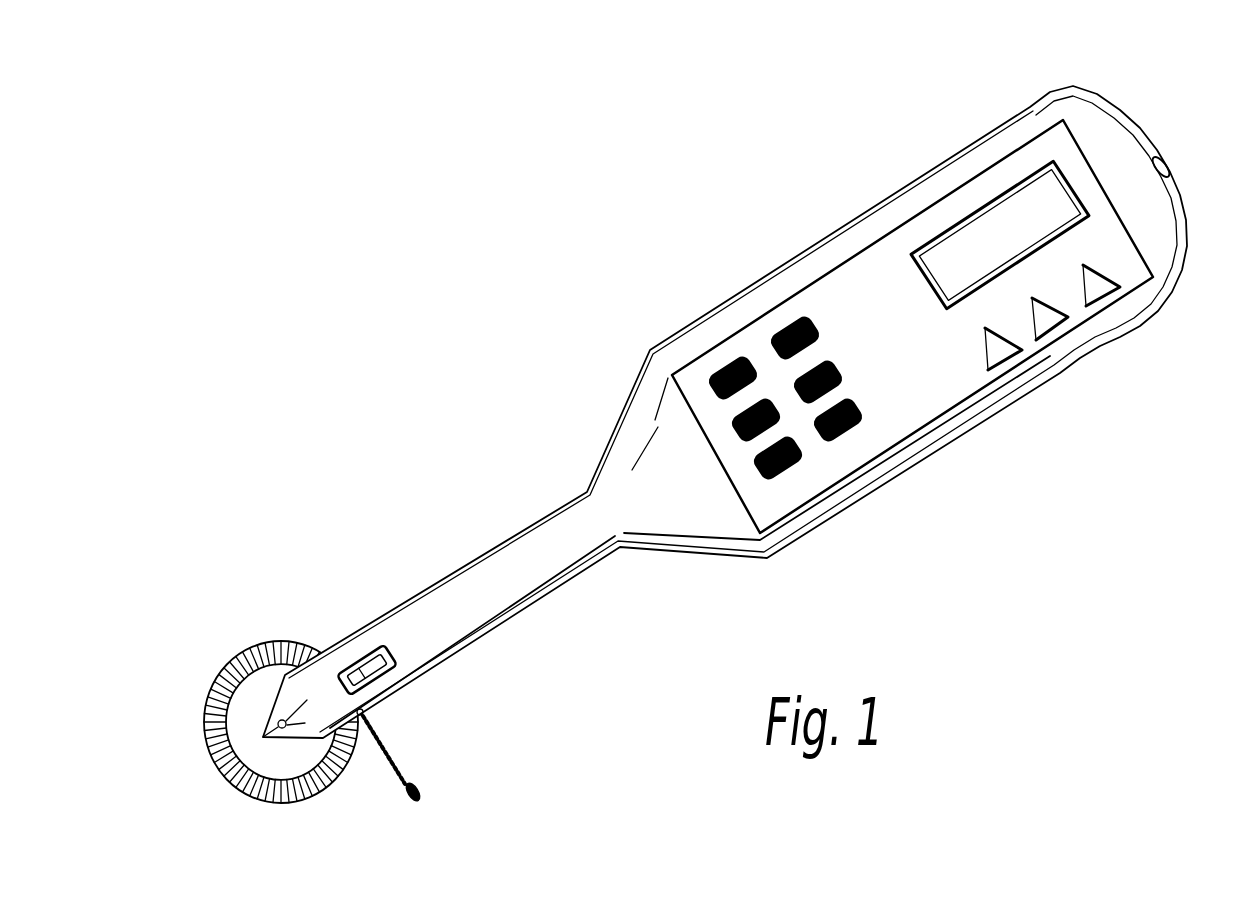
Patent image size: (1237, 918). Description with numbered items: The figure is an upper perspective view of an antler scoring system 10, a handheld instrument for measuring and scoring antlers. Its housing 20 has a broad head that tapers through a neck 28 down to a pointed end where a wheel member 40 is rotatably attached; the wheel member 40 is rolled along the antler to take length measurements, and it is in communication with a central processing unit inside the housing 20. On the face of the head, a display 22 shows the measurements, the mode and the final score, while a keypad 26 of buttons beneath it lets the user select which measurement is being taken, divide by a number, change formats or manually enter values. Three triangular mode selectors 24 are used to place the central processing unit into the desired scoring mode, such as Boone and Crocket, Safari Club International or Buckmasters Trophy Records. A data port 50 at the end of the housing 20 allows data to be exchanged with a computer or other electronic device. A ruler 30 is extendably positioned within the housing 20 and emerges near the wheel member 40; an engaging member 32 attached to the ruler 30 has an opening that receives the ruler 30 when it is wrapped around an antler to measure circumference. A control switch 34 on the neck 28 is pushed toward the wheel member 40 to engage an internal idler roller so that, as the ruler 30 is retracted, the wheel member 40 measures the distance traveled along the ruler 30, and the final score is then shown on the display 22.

The antler scoring system 10 is at (478, 352).
The housing 20 is at (850, 243).
The display 22 is at (1010, 193).
The mode selectors 24 is at (1097, 317).
The keypad 26 is at (770, 340).
The neck 28 is at (470, 595).
The ruler 30 is at (408, 744).
The engaging member 32 is at (418, 791).
The control switch 34 is at (370, 650).
The wheel member 40 is at (262, 690).
The data port 50 is at (1168, 172).